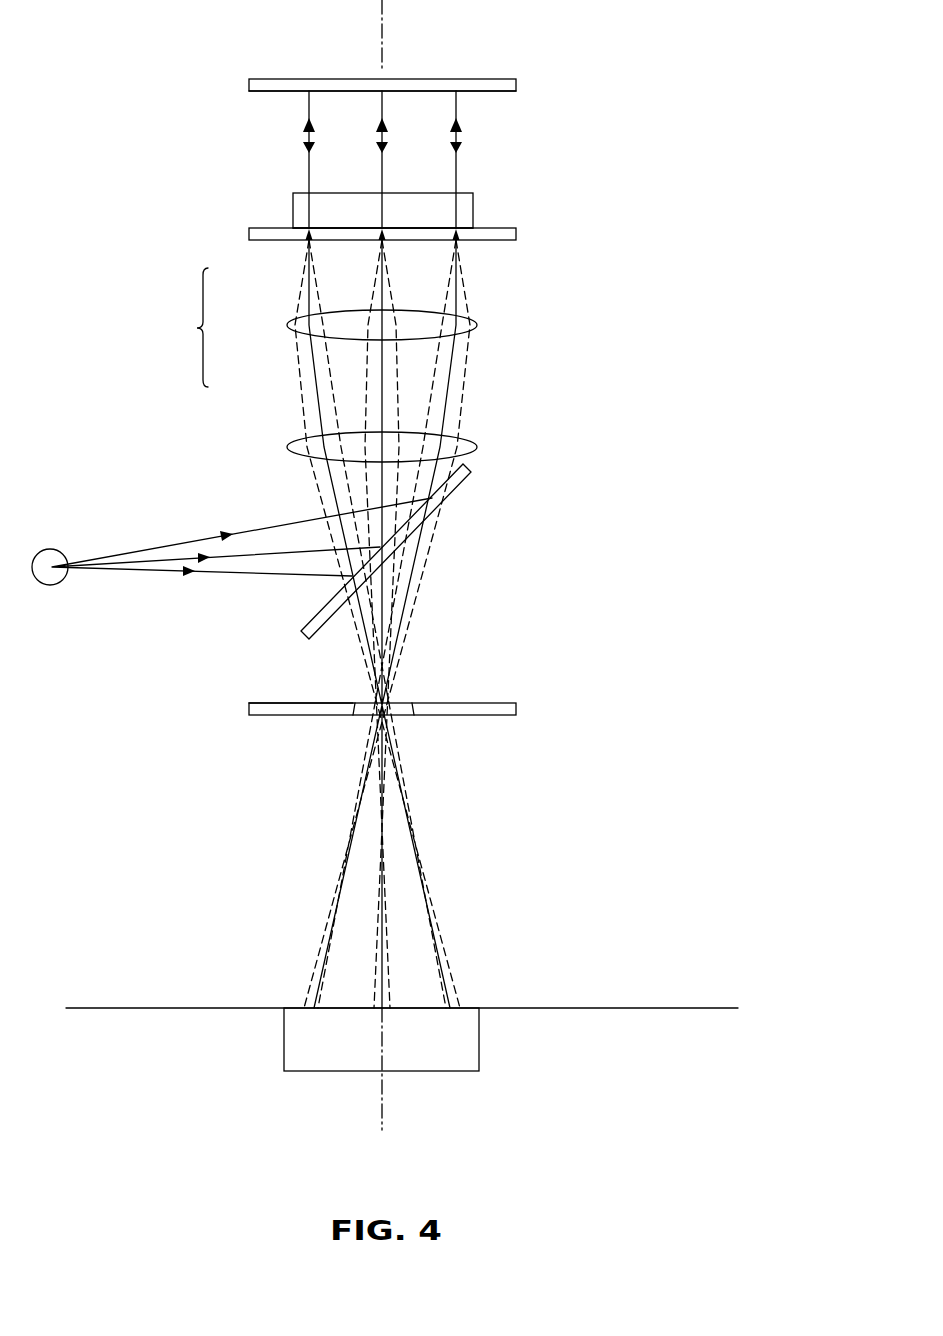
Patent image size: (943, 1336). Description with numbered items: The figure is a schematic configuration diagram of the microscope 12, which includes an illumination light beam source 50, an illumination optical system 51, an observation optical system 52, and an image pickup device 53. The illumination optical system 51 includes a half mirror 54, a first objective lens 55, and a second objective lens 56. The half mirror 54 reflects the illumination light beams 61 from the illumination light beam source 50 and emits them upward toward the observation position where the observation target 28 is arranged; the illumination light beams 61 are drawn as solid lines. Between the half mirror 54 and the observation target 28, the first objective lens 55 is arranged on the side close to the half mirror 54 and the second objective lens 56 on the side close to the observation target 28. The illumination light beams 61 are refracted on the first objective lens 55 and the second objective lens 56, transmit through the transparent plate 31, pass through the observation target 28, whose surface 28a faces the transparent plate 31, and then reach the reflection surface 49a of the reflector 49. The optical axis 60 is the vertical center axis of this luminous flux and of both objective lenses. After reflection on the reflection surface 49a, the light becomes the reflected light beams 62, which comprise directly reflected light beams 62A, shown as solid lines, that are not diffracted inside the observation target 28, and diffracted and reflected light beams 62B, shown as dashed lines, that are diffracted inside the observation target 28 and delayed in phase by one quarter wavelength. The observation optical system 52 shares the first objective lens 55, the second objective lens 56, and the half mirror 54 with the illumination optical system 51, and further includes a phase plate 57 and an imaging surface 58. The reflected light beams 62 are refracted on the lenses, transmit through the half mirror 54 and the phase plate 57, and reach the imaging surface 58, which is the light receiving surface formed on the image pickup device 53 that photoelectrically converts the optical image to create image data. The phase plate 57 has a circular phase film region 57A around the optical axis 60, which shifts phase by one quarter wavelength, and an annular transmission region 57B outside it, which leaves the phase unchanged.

The microscope 12 is at (147, 266).
The observation target 28 is at (473, 208).
The sample surface 28a is at (345, 238).
The transparent plate 31 is at (516, 233).
The reflector 49 is at (279, 79).
The reflection surface 49a is at (494, 92).
The illumination light beam source 50 is at (48, 548).
The illumination optical system 51 is at (171, 442).
The observation optical system 52 is at (506, 651).
The image pickup device 53 is at (479, 1038).
The half mirror 54 is at (463, 490).
The first objective lens 55 is at (477, 447).
The second objective lens 56 is at (477, 325).
The phase plate 57 is at (516, 710).
The phase film region 57A is at (388, 705).
The transmission region 57B is at (270, 703).
The imaging surface 58 is at (298, 1005).
The optical axis 60 is at (382, 17).
The illumination light beams 61 is at (200, 539).
The reflected light beams 62 is at (186, 327).
The directly reflected light beams 62A is at (318, 372).
The diffracted and reflected light beams 62B is at (300, 286).